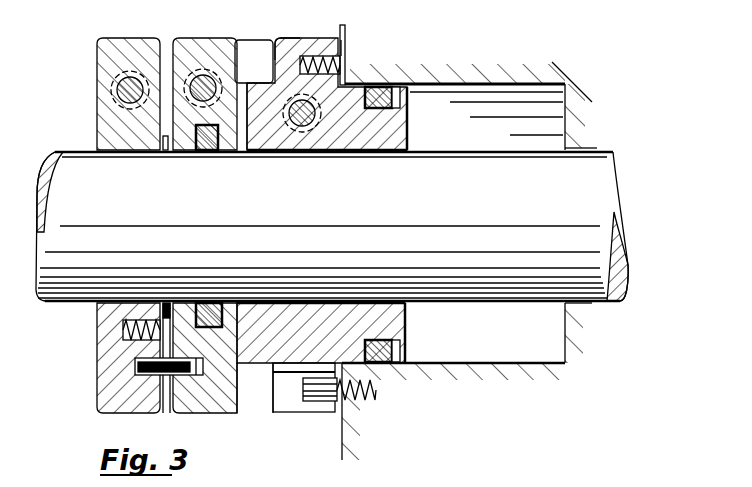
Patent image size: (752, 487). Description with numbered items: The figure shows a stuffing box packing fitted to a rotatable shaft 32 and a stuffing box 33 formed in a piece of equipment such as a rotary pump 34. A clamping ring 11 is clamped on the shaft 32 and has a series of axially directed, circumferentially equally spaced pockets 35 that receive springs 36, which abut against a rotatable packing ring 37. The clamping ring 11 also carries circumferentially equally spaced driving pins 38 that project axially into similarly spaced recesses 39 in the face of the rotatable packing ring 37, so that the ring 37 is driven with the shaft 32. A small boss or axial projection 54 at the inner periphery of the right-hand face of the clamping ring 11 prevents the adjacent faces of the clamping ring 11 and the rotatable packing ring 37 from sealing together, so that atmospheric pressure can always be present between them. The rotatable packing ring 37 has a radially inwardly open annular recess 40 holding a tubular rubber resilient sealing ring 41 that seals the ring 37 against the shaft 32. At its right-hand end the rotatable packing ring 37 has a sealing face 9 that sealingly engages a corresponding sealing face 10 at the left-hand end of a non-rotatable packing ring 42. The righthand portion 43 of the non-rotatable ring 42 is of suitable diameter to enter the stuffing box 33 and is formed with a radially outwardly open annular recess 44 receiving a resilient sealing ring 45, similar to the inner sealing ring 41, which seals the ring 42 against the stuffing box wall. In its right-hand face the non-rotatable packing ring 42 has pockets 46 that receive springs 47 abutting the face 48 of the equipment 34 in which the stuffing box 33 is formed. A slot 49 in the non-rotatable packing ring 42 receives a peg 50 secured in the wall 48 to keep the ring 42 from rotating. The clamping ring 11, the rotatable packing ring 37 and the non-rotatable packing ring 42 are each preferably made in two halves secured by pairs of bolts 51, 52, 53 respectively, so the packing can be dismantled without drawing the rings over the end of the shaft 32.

The sealing face 9 is at (285, 75).
The sealing face 10 is at (246, 86).
The clamping ring 11 is at (100, 95).
The rotatable shaft 32 is at (608, 180).
The stuffing box 33 is at (490, 82).
The rotary pump 34 is at (588, 110).
The pockets 35 is at (118, 347).
The springs 36 is at (123, 332).
The rotatable packing ring 37 is at (193, 404).
The driving pins 38 is at (158, 373).
The recesses 39 is at (200, 376).
The annular recess 40 is at (233, 303).
The resilient sealing ring 41 is at (212, 303).
The non-rotatable packing ring 42 is at (276, 38).
The righthand portion 43 is at (368, 87).
The annular recess 44 is at (393, 106).
The resilient sealing ring 45 is at (396, 110).
The pockets 46 is at (346, 50).
The springs 47 is at (345, 66).
The face 48 is at (341, 31).
The slot 49 is at (280, 405).
The peg 50 is at (320, 405).
The bolts 51 is at (116, 88).
The bolts 52 is at (214, 78).
The bolts 53 is at (290, 93).
The axial projection 54 is at (165, 153).